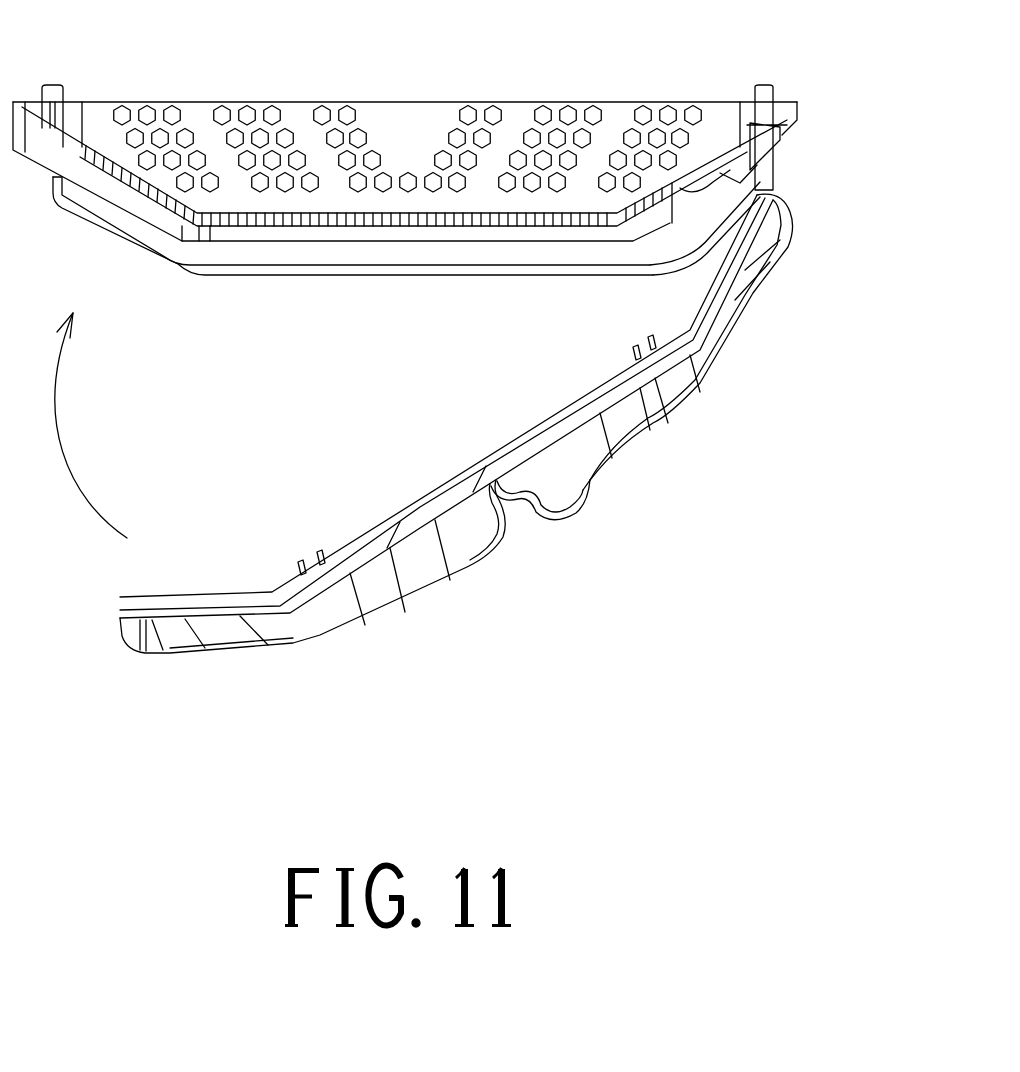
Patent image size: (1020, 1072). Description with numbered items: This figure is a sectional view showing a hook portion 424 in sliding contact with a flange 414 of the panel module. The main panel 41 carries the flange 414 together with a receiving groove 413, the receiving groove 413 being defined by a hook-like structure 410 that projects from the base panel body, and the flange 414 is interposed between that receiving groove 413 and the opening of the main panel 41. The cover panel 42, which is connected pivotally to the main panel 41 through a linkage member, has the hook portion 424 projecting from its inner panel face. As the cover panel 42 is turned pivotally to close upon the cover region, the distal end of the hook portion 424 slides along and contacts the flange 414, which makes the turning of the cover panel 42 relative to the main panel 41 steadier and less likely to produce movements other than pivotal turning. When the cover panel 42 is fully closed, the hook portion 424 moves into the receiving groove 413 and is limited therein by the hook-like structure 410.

The main panel 41 is at (418, 128).
The cover panel 42 is at (330, 640).
The hook-like structure 410 is at (783, 140).
The receiving groove 413 is at (785, 130).
The flange 414 is at (660, 268).
The hook portion 424 is at (730, 170).